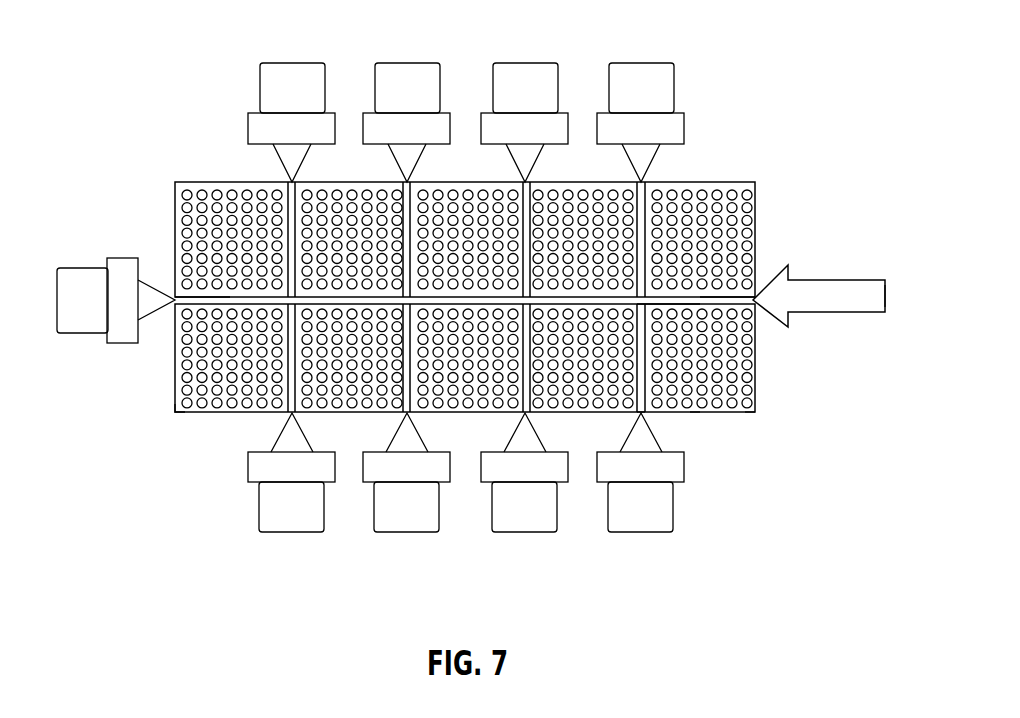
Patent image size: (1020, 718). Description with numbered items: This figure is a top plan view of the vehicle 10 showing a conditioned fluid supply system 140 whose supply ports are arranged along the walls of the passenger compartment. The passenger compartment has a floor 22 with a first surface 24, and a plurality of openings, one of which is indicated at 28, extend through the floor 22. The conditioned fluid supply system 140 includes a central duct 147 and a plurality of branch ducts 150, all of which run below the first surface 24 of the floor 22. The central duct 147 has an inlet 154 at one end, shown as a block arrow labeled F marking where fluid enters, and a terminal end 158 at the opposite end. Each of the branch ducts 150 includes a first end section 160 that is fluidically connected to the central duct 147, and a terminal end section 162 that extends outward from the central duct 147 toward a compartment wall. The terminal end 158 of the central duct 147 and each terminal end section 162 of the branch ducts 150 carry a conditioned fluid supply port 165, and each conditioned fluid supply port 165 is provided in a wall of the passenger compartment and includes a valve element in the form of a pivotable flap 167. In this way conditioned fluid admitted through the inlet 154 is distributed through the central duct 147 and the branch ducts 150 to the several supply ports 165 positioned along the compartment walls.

The vehicle 10 is at (760, 433).
The floor 22 is at (180, 422).
The first surface 24 is at (747, 350).
The opening 28 is at (703, 186).
The conditioned fluid supply system 140 is at (697, 452).
The central duct 147 is at (722, 296).
The branch ducts 150 is at (640, 232).
The inlet 154 is at (758, 293).
The terminal end 158 is at (188, 297).
The first end section 160 is at (638, 310).
The terminal end section 162 is at (641, 414).
The conditioned fluid supply port 165 is at (283, 70).
The pivotable flap 167 is at (288, 168).
The air flow direction F is at (847, 292).